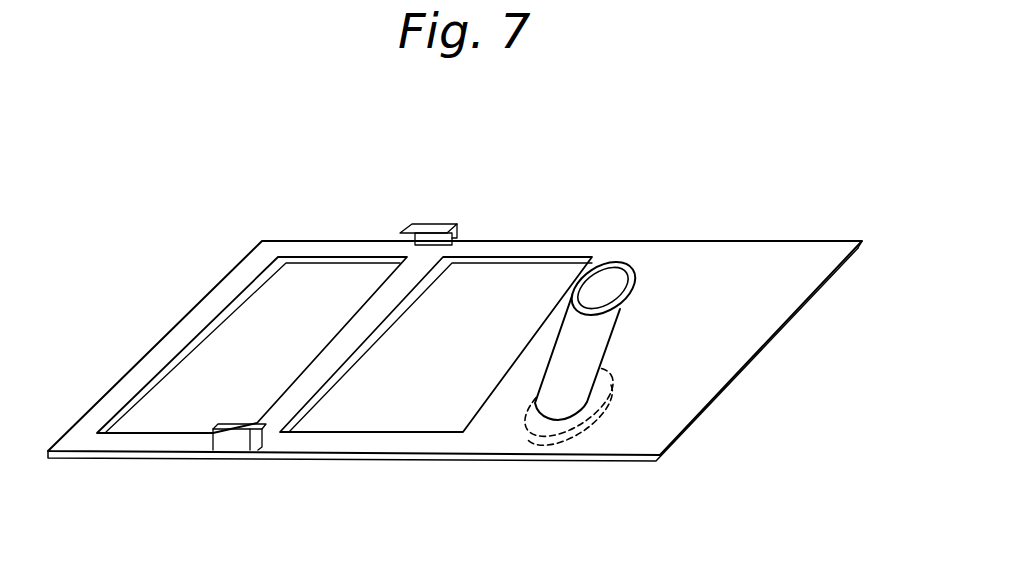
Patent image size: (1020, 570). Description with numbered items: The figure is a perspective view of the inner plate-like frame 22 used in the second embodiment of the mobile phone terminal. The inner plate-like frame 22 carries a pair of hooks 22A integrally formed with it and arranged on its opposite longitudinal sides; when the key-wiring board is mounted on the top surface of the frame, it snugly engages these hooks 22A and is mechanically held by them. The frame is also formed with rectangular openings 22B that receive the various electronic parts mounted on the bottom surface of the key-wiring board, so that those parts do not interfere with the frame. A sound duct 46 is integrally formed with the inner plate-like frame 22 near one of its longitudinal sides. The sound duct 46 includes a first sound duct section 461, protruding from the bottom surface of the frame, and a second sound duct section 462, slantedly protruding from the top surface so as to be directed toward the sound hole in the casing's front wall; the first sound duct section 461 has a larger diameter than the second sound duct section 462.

The inner plate-like frame 22 is at (566, 238).
The hooks 22A is at (428, 222).
The rectangular openings 22B is at (226, 315).
The sound duct 46 is at (634, 329).
The first sound duct section 461 is at (595, 433).
The second sound duct section 462 is at (565, 353).